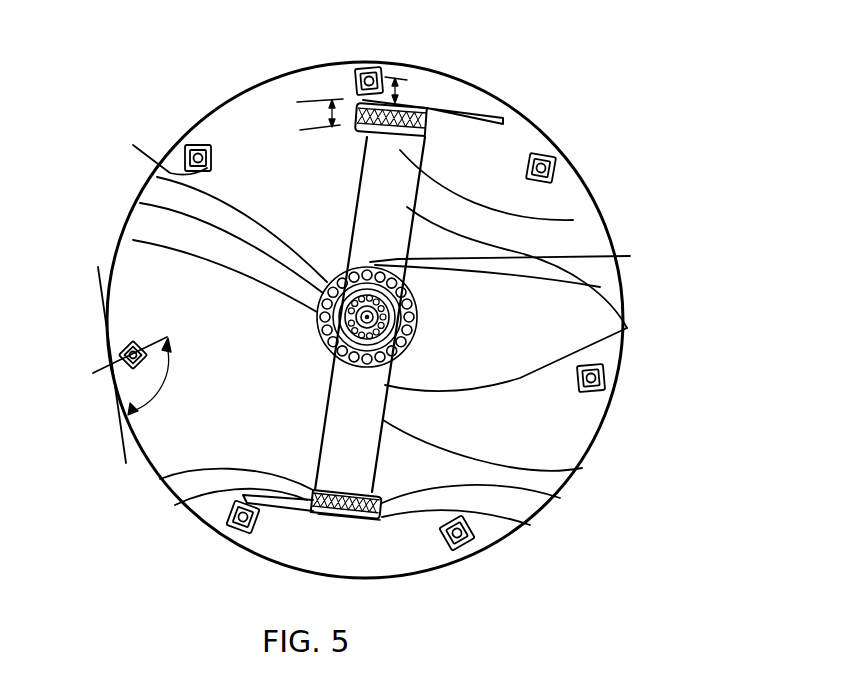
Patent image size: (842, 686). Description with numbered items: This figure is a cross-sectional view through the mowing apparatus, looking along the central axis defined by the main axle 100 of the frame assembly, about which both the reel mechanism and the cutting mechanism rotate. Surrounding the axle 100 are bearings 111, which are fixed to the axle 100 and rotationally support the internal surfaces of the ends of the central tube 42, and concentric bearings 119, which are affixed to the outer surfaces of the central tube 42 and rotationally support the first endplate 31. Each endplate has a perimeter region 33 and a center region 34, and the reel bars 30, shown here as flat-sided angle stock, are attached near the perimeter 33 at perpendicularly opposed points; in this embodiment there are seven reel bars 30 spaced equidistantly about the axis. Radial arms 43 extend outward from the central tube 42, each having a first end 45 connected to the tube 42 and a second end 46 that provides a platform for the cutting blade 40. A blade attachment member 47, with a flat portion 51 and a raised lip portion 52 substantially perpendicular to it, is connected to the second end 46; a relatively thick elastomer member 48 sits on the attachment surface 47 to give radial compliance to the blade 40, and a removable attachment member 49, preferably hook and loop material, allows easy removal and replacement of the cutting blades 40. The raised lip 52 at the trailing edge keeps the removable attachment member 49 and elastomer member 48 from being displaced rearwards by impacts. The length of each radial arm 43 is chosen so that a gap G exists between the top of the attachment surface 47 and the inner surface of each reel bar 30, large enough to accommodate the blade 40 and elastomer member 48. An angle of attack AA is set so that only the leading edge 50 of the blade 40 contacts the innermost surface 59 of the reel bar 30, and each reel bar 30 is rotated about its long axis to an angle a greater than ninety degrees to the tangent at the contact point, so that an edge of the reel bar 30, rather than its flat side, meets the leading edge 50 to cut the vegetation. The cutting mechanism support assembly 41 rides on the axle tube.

The reel bars 30 is at (368, 65).
The first endplate 31 is at (592, 187).
The perimeter region 33 is at (562, 437).
The center region 34 is at (310, 215).
The cutting blades 40 is at (345, 522).
The cutting mechanism support assembly 41 is at (627, 328).
The central tube 42 is at (582, 468).
The radial arms 43 is at (630, 256).
The first end 45 is at (600, 287).
The second end 46 is at (573, 220).
The blade attachment member 47 is at (160, 479).
The elastomer member 48 is at (175, 505).
The removable attachment member 49 is at (367, 517).
The leading edge 50 is at (230, 503).
The flat portion 51 is at (560, 498).
The raised lip portion 52 is at (530, 525).
The innermost surface 59 is at (159, 144).
The main axle 100 is at (157, 177).
The bearings 111 is at (140, 203).
The bearings 119 is at (133, 240).
The gap G is at (345, 118).
The angle a is at (130, 412).
The angle of attack AA is at (410, 90).